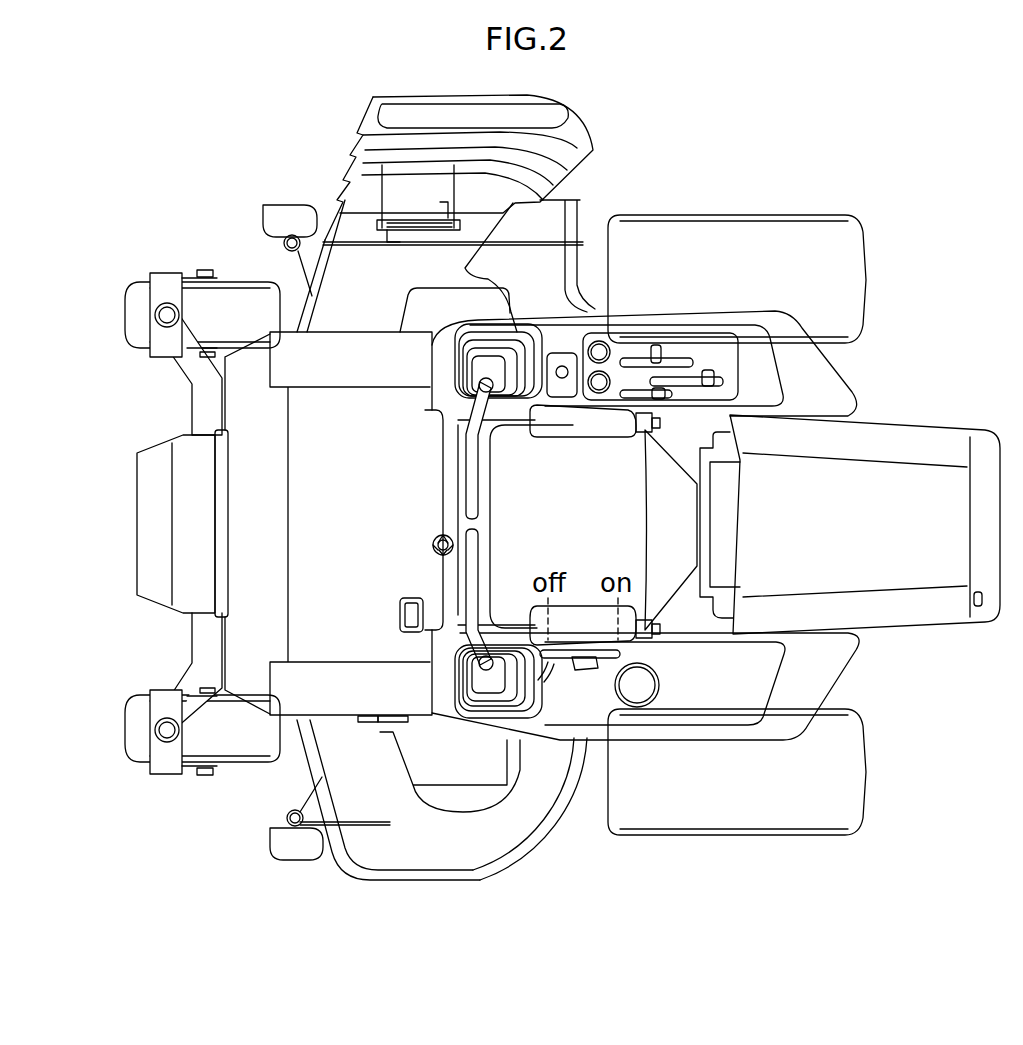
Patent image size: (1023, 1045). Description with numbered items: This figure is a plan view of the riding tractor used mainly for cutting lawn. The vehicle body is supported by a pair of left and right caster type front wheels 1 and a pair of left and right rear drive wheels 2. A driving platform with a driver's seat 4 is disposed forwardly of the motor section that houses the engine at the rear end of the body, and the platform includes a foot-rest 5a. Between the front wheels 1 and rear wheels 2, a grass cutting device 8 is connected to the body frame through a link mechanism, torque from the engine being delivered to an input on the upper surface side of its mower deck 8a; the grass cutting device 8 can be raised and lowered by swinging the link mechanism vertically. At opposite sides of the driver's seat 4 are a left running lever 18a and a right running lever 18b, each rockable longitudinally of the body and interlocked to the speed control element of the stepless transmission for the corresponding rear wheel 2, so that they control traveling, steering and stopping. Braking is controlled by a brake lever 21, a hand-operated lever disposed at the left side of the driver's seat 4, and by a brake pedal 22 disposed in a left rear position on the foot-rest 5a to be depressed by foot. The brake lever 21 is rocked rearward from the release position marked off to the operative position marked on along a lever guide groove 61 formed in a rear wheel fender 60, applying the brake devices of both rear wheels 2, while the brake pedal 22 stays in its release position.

The caster type front wheels 1 is at (125, 313).
The rear drive wheels 2 is at (864, 278).
The driver's seat 4 is at (635, 524).
The foot-rest 5a is at (347, 648).
The grass cutting device 8 is at (295, 772).
The mower deck 8a is at (543, 826).
The left running lever 18a is at (468, 579).
The right running lever 18b is at (468, 484).
The brake lever 21 is at (545, 675).
The brake pedal 22 is at (398, 609).
The rear wheel fender 60 is at (710, 710).
The lever guide groove 61 is at (578, 657).